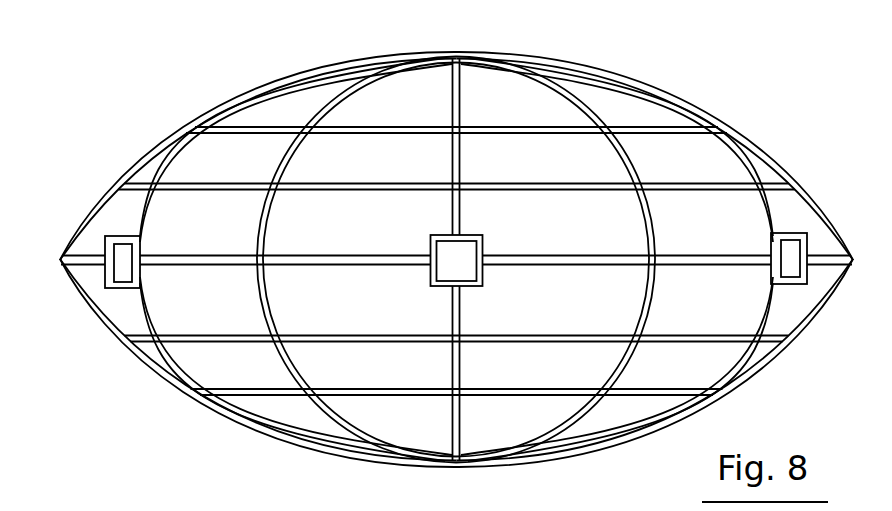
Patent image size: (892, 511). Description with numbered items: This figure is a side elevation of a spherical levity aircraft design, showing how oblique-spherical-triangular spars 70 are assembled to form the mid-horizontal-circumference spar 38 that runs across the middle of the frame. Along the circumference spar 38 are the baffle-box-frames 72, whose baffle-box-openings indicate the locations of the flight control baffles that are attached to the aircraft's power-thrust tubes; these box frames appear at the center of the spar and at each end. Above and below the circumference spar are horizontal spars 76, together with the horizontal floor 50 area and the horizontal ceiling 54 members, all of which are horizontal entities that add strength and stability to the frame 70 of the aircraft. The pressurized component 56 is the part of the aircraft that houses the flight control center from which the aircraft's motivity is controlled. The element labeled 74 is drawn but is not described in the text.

The mid-horizontal-circumference spar 38 is at (358, 252).
The horizontal floor 50 is at (612, 393).
The horizontal ceiling members 54 is at (262, 347).
The pressurized component 56 is at (677, 358).
The oblique-spherical-triangular spars 70 is at (223, 102).
The baffle-box-frames 72 is at (112, 285).
The vertical axis spar 74 is at (405, 205).
The horizontal spars 76 is at (447, 125).